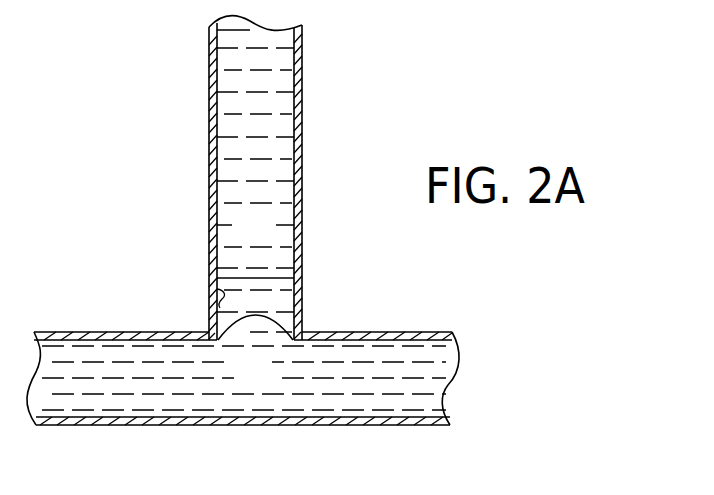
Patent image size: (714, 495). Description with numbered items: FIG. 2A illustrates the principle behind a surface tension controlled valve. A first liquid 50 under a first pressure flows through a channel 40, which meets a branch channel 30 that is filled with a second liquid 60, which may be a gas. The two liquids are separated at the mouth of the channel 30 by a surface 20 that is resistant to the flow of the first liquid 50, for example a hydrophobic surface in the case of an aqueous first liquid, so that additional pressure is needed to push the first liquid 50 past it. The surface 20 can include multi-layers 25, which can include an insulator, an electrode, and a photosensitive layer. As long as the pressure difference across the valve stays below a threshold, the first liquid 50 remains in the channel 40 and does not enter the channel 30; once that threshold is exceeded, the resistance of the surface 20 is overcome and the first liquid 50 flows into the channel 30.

The surface 20 is at (308, 277).
The multi-layers 25 is at (217, 291).
The channel 30 is at (303, 73).
The channel 40 is at (92, 426).
The first liquid 50 is at (266, 380).
The second liquid 60 is at (268, 236).